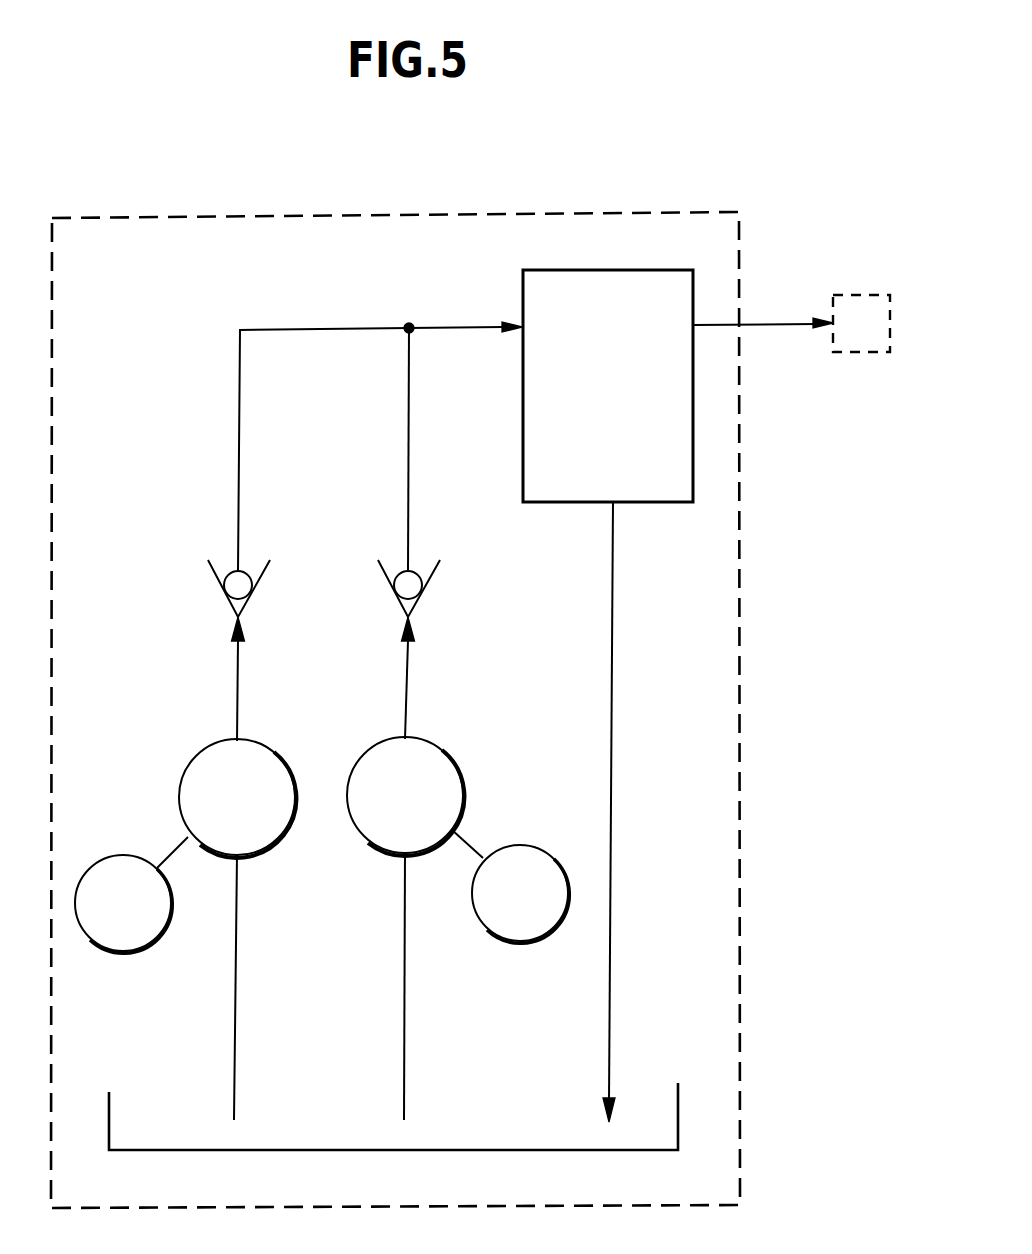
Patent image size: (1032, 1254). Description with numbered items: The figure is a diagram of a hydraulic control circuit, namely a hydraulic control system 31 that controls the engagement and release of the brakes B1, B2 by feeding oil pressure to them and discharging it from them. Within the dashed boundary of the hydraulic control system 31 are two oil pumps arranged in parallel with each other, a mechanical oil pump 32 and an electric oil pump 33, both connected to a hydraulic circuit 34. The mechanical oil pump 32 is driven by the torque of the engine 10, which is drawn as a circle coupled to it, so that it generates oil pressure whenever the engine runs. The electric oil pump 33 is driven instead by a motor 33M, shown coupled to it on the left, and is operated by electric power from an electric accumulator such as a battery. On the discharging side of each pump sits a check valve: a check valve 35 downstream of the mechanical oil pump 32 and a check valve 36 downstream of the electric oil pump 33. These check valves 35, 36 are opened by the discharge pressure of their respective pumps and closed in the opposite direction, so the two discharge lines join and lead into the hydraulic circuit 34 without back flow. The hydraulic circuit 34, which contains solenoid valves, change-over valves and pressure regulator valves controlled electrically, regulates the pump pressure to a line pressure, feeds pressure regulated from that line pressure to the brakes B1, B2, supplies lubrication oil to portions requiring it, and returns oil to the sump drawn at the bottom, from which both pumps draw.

The hydraulic control system 31 is at (472, 215).
The hydraulic circuit 34 is at (663, 503).
The brake B1 is at (857, 354).
The brake B2 is at (856, 353).
The check valve 36 is at (250, 568).
The check valve 35 is at (420, 568).
The electric oil pump 33 is at (268, 748).
The motor 33M is at (101, 862).
The mechanical oil pump 32 is at (452, 755).
The engine 10 is at (561, 868).